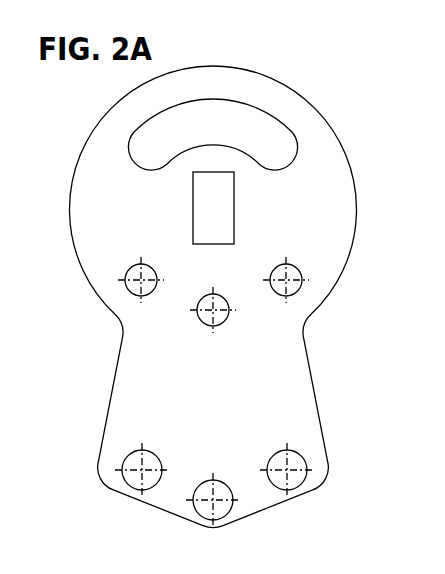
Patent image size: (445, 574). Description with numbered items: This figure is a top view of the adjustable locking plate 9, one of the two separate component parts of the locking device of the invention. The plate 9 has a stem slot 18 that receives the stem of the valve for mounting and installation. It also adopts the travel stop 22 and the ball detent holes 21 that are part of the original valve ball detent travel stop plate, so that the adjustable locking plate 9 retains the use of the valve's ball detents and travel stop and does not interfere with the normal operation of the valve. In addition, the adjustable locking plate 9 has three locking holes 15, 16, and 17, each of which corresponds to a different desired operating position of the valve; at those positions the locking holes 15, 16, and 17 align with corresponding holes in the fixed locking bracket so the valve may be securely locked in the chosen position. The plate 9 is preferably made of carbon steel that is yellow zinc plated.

The adjustable locking plate 9 is at (277, 357).
The travel stop 22 is at (218, 99).
The stem slot 18 is at (235, 202).
The ball detent holes 21 is at (157, 276).
The locking hole 15 is at (122, 458).
The locking hole 16 is at (232, 505).
The locking hole 17 is at (305, 478).